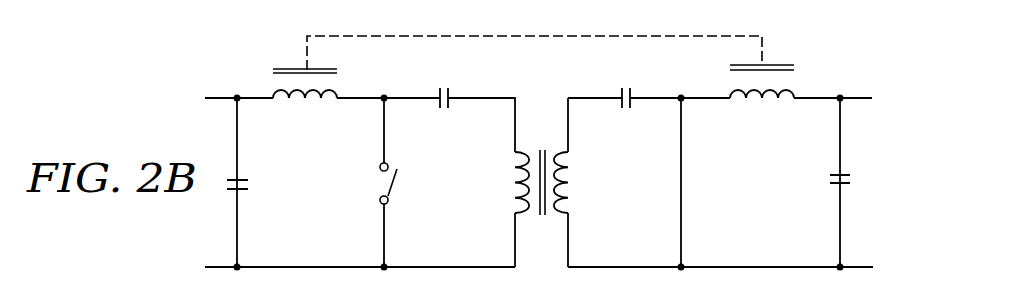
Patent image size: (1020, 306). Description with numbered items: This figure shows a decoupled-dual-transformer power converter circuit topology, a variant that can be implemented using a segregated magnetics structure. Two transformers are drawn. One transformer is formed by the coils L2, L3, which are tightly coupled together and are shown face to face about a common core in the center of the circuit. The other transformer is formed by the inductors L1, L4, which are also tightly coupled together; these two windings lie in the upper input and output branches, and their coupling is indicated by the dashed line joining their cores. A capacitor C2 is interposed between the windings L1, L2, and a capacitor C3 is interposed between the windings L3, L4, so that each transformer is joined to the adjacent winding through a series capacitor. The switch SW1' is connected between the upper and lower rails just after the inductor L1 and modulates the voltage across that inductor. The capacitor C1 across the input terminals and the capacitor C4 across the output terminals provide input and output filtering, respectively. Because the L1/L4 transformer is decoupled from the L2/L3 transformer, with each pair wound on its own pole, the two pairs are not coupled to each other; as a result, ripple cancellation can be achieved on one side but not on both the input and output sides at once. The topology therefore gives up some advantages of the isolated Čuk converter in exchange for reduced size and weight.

The input filtering capacitor C1 is at (252, 186).
The capacitor C2 is at (444, 114).
The capacitor C3 is at (624, 114).
The output filtering capacitor C4 is at (855, 182).
The inductor L1 is at (305, 100).
The coil L2 is at (520, 182).
The coil L3 is at (571, 182).
The inductor L4 is at (762, 98).
The switch SW1' is at (411, 184).